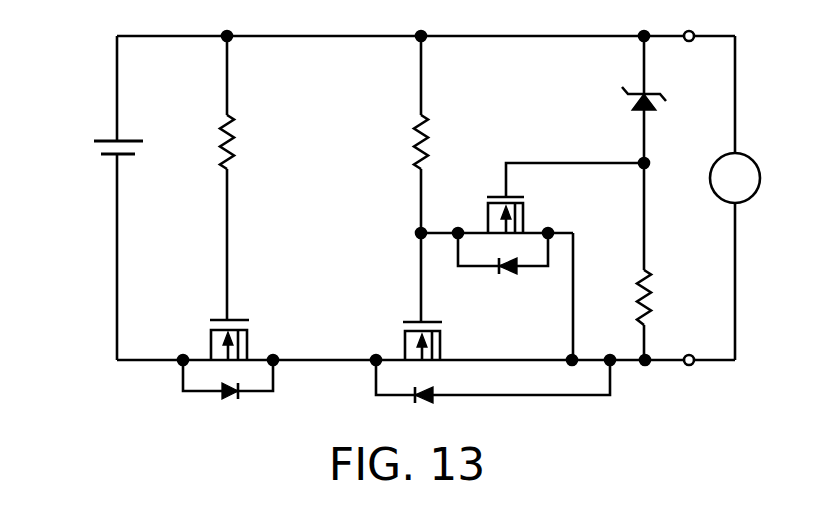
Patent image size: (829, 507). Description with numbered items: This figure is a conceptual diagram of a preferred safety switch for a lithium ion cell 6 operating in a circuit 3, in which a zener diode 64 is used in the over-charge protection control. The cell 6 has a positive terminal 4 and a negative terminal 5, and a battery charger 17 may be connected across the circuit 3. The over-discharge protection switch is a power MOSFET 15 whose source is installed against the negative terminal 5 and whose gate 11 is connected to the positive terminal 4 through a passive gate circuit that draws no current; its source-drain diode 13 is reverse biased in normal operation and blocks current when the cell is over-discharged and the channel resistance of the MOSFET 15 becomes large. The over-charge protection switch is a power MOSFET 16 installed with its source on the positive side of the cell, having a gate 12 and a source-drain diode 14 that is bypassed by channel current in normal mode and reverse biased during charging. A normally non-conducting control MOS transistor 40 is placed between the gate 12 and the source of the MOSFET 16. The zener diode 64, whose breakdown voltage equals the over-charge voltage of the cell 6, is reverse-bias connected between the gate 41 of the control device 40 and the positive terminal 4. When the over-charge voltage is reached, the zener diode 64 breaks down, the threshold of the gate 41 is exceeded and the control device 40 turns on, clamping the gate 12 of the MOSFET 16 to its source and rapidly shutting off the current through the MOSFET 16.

The circuit 3 is at (340, 36).
The positive terminal 4 is at (127, 141).
The negative terminal 5 is at (128, 154).
The lithium ion cell 6 is at (108, 174).
The gate 11 is at (230, 321).
The gate 12 is at (377, 315).
The source-drain diode 13 is at (225, 395).
The source-drain diode 14 is at (410, 397).
The over-discharge protection MOSFET 15 is at (285, 336).
The over-charge protection MOSFET 16 is at (385, 343).
The battery charger 17 is at (757, 160).
The control MOS transistor 40 is at (532, 261).
The gate 41 is at (500, 195).
The zener diode 64 is at (662, 98).